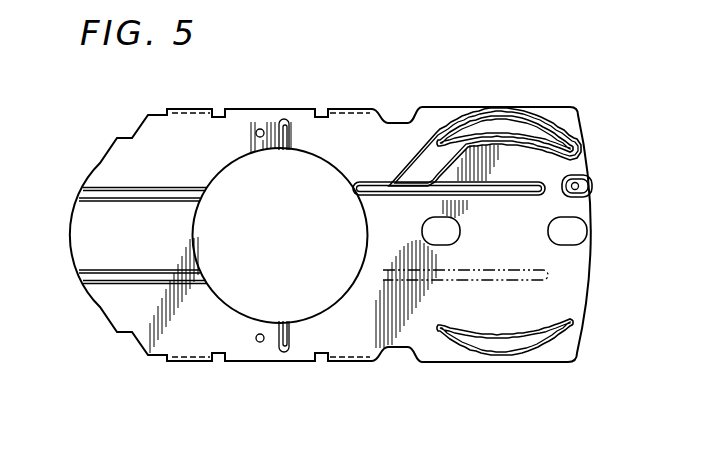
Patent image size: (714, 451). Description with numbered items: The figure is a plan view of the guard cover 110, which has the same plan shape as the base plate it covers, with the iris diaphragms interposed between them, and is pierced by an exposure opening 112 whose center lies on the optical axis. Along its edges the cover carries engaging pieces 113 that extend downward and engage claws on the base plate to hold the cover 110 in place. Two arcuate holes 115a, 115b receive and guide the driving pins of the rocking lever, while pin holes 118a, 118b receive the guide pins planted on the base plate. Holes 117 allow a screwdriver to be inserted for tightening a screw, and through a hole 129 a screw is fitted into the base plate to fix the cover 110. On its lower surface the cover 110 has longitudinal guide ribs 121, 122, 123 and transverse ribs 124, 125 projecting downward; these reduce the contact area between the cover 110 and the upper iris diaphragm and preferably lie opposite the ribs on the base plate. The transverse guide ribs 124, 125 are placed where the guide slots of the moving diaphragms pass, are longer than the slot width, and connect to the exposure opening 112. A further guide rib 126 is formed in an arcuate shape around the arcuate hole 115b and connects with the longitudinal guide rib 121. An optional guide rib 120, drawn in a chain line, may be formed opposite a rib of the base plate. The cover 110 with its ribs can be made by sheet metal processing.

The guard cover 110 is at (578, 307).
The exposure opening 112 is at (233, 173).
The engaging pieces 113 is at (362, 109).
The arcuate hole 115a is at (497, 336).
The arcuate hole 115b is at (511, 128).
The holes 117 is at (458, 234).
The pin hole 118a is at (260, 342).
The pin hole 118b is at (259, 129).
The guide rib 120 is at (546, 277).
The longitudinal guide rib 121 is at (528, 182).
The longitudinal guide rib 122 is at (82, 277).
The longitudinal guide rib 123 is at (84, 193).
The transverse guide rib 124 is at (284, 351).
The transverse guide rib 125 is at (286, 119).
The guide rib 126 is at (425, 155).
The hole 129 is at (579, 186).